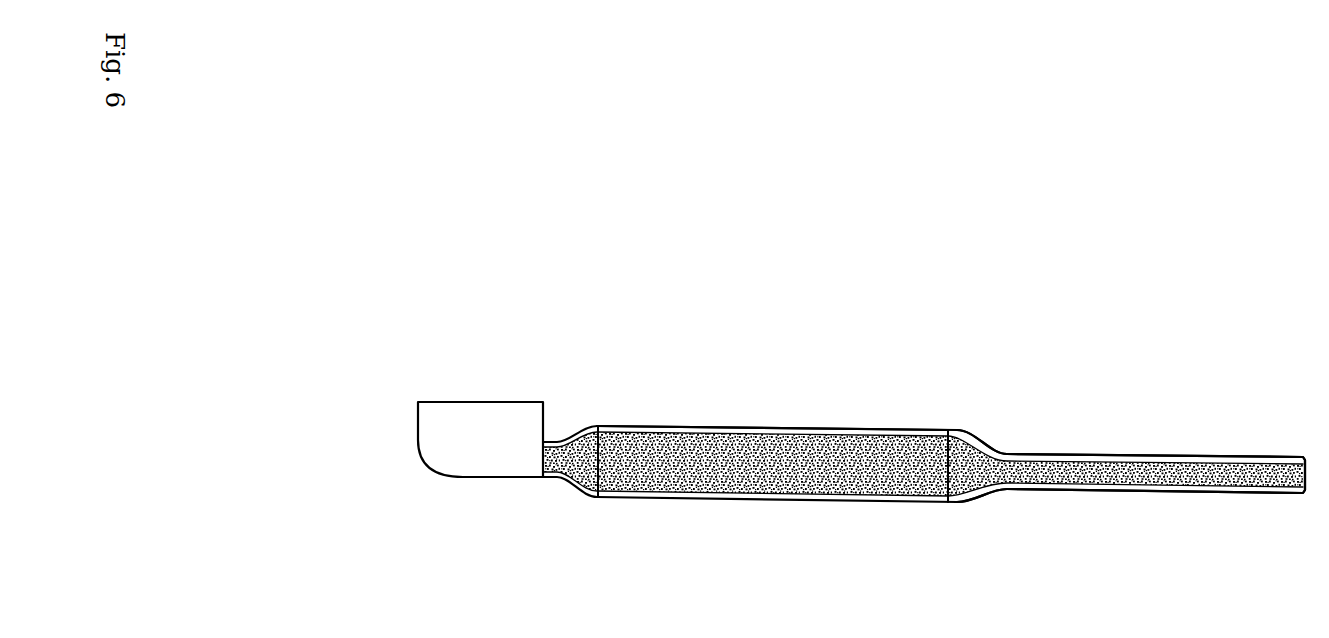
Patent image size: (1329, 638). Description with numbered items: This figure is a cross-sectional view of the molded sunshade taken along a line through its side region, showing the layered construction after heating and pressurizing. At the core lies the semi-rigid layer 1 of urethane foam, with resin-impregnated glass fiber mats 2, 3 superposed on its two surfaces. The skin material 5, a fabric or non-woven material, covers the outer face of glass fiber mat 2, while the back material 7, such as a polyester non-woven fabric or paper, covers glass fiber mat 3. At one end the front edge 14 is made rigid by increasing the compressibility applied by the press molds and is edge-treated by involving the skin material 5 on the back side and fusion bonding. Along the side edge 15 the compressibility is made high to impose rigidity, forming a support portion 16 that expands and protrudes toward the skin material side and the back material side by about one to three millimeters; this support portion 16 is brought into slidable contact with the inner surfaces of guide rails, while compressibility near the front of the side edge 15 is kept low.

The semi-rigid layer 1 is at (932, 447).
The glass fiber mat 2 is at (770, 488).
The glass fiber mat 3 is at (727, 430).
The skin material 5 is at (845, 500).
The back material 7 is at (1152, 453).
The front edge 14 is at (418, 407).
The side edge 15 is at (1048, 447).
The support portion 16 is at (797, 421).